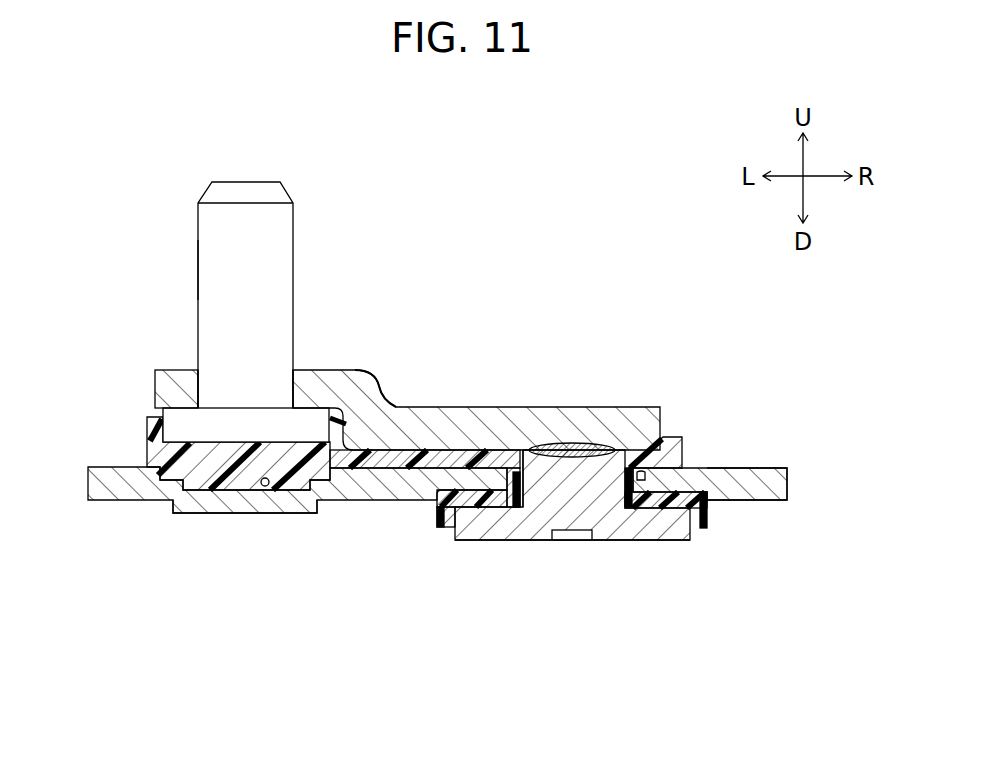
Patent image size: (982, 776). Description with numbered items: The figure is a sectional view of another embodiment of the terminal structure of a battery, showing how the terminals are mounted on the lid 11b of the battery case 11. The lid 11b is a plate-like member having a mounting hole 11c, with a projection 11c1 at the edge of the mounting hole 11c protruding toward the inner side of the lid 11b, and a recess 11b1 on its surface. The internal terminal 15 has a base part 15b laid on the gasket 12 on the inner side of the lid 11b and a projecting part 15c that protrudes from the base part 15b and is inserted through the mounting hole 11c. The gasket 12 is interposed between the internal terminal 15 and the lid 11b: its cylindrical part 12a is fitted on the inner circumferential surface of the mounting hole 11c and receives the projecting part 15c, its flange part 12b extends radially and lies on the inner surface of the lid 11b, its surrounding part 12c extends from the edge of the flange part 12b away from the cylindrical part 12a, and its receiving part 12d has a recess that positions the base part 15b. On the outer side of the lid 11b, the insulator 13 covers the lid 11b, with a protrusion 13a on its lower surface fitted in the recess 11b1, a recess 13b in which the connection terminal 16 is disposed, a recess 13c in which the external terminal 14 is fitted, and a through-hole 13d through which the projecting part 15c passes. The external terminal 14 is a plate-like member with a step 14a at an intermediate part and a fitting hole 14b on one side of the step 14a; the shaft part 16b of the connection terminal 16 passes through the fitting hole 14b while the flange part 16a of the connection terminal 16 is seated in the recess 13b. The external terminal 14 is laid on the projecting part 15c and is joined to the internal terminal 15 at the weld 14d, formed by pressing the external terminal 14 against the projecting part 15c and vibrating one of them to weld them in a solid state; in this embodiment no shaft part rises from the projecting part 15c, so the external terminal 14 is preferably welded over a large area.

The battery case 11 is at (803, 482).
The lid 11b is at (757, 468).
The recess 11b1 is at (268, 486).
The mounting hole 11c is at (630, 500).
The projection 11c1 is at (642, 482).
The gasket 12 is at (428, 519).
The cylindrical part 12a is at (500, 500).
The flange part 12b is at (700, 488).
The surrounding part 12c is at (440, 528).
The receiving part 12d is at (450, 528).
The insulator 13 is at (134, 452).
The protrusion 13a is at (200, 513).
The recess 13b is at (183, 440).
The recess 13c is at (463, 450).
The through-hole 13d is at (523, 485).
The external terminal 14 is at (424, 391).
The step 14a is at (387, 366).
The fitting hole 14b is at (287, 380).
The weld 14d is at (575, 444).
The internal terminal 15 is at (707, 548).
The base part 15b is at (663, 540).
The projecting part 15c is at (650, 440).
The connection terminal 16 is at (278, 175).
The flange part 16a is at (240, 400).
The shaft part 16b is at (198, 270).